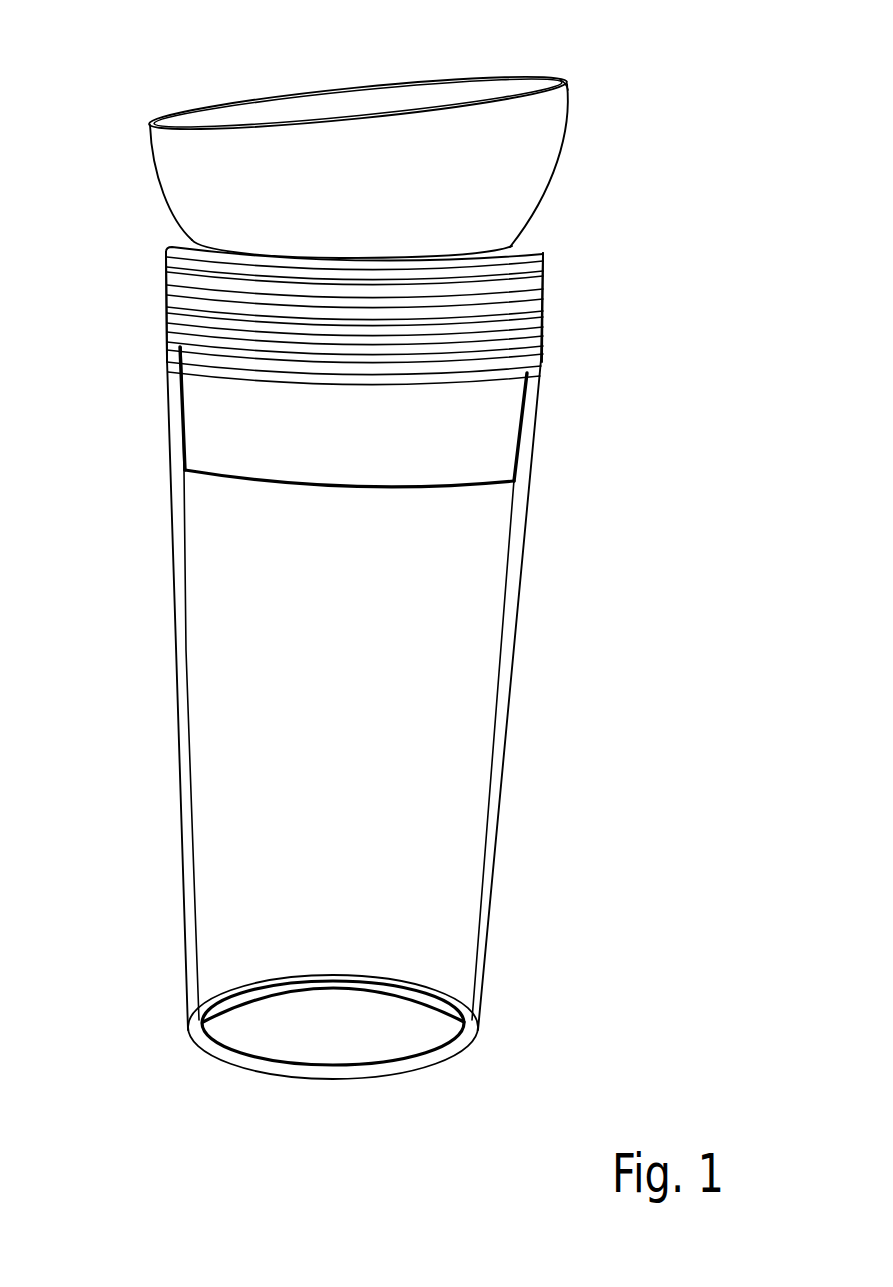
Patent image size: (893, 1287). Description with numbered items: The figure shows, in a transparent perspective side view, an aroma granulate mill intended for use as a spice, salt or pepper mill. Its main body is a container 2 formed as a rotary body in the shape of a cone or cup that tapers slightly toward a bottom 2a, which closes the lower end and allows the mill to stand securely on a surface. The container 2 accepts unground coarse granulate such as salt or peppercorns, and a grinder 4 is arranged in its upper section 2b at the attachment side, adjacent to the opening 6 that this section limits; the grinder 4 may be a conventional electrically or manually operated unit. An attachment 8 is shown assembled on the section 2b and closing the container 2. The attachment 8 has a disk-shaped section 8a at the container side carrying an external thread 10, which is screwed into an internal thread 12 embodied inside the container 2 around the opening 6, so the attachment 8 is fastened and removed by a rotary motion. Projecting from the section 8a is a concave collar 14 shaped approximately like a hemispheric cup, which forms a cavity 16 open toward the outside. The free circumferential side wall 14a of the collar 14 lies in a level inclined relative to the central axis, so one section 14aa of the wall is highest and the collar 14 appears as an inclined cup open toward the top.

The container 2 is at (385, 749).
The bottom 2a is at (413, 1067).
The section at the attachment side 2b is at (546, 335).
The grinder 4 is at (403, 438).
The opening 6 is at (548, 264).
The attachment 8 is at (136, 215).
The disk-shaped section at the container side 8a is at (530, 262).
The external thread 10 is at (183, 278).
The internal thread 12 is at (182, 343).
The concave collar 14 is at (440, 210).
The circumferential side wall 14a is at (342, 90).
The section located farthest away 14aa is at (567, 82).
The cavity 16 is at (461, 98).